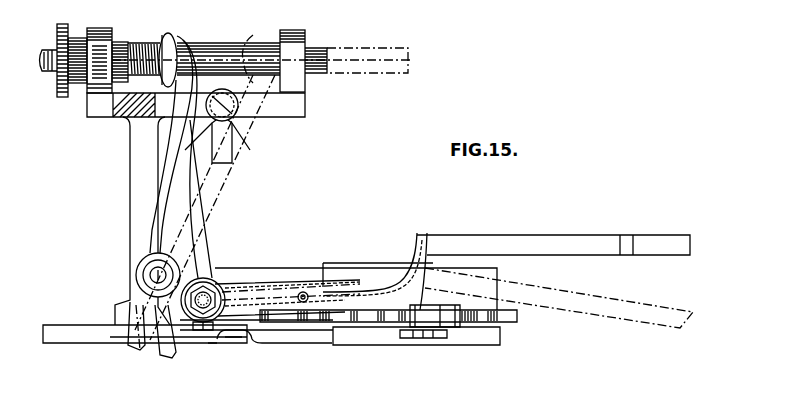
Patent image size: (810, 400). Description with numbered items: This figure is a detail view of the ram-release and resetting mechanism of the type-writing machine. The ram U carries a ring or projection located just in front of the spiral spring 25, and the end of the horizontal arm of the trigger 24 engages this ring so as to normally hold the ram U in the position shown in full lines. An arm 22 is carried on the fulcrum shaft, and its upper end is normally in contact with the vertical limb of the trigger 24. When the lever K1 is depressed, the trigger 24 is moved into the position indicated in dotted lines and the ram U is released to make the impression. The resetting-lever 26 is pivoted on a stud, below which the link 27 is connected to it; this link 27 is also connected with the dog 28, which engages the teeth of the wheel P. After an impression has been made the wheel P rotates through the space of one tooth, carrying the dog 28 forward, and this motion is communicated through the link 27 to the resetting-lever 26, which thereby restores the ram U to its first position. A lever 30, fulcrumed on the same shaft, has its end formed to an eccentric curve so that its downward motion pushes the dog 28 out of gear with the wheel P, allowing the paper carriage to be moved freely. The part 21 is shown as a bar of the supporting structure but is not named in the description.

The base bar 21 is at (296, 97).
The arm 22 is at (195, 230).
The trigger 24 is at (240, 158).
The spiral spring 25 is at (150, 40).
The resetting-lever 26 is at (182, 45).
The link 27 is at (256, 331).
The dog 28 is at (448, 323).
The lever 30 is at (413, 252).
The ram U is at (48, 72).
The wheel P is at (524, 316).
The lever K1 is at (497, 238).